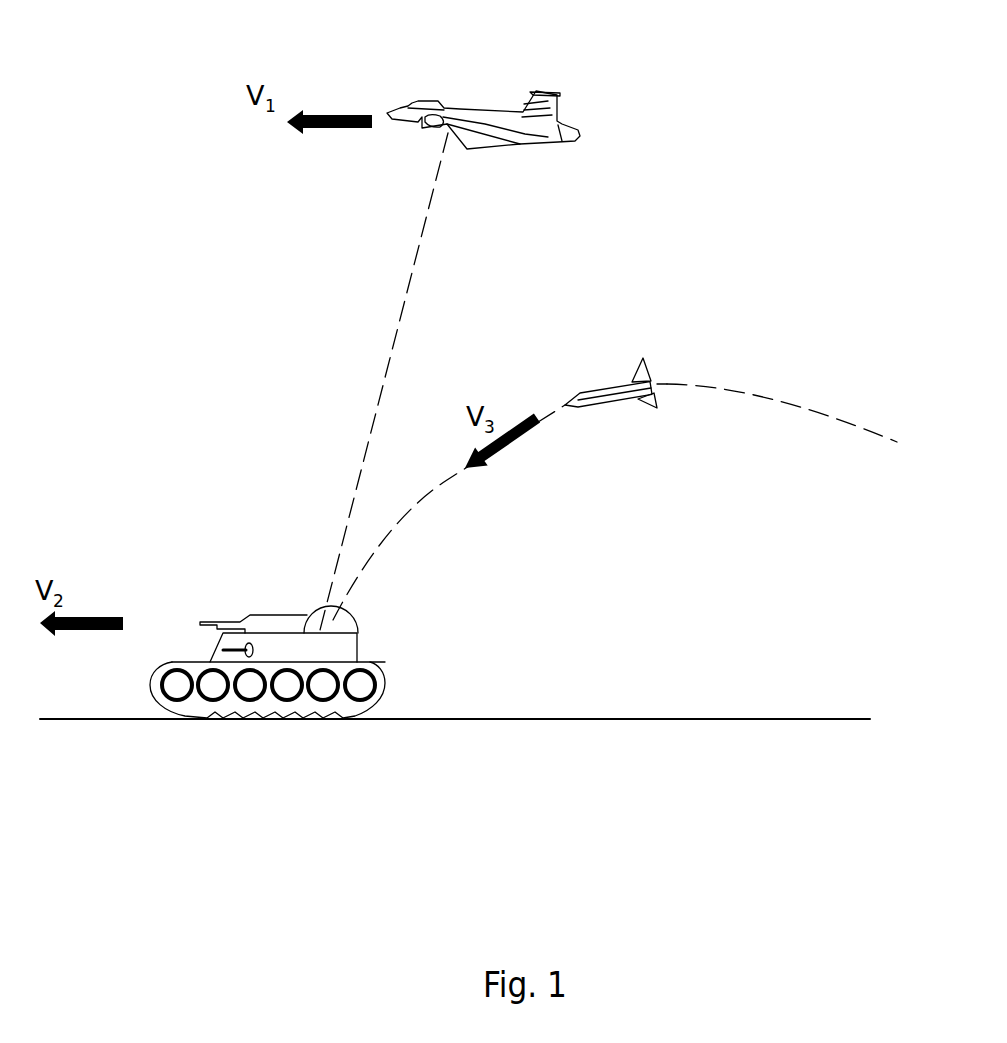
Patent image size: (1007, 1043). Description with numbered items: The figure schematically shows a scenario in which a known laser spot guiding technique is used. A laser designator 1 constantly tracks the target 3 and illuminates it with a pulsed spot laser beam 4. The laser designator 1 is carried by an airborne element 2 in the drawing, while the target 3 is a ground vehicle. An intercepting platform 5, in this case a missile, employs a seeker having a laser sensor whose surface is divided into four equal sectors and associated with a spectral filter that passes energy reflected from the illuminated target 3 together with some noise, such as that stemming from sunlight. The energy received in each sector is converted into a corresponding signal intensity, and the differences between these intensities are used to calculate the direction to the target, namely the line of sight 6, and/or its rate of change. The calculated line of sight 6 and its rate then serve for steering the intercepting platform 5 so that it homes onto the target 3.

The laser designator 1 is at (427, 123).
The aircraft 2 is at (445, 92).
The target 3 is at (250, 700).
The pulsed spot laser beam 4 is at (385, 383).
The intercepting platform 5 is at (605, 402).
The line of sight (LOS) 6 is at (400, 523).